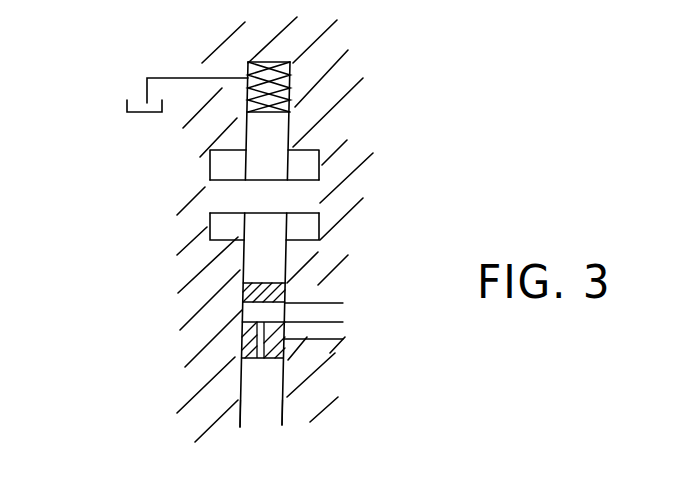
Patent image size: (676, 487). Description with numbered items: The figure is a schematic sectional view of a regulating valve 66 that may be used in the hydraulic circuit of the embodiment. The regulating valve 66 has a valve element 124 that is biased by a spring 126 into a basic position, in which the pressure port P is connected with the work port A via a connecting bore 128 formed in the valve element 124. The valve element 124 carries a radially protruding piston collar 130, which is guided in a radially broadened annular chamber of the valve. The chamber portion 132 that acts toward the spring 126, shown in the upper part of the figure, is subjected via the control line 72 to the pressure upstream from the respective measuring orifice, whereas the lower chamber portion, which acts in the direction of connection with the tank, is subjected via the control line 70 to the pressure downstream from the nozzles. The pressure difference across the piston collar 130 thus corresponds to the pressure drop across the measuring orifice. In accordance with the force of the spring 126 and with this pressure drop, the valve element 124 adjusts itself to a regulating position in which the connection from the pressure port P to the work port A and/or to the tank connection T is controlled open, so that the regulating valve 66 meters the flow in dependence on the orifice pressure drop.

The regulating valve 66 is at (335, 45).
The spring 126 is at (290, 88).
The chamber portion 132 is at (218, 156).
The control line 72 is at (210, 159).
The control line 70 is at (210, 228).
The piston collar 130 is at (298, 198).
The valve element 124 is at (290, 256).
The tank connection T is at (285, 287).
The pressure port P is at (330, 332).
The connecting bore 128 is at (242, 340).
The work port A is at (258, 393).